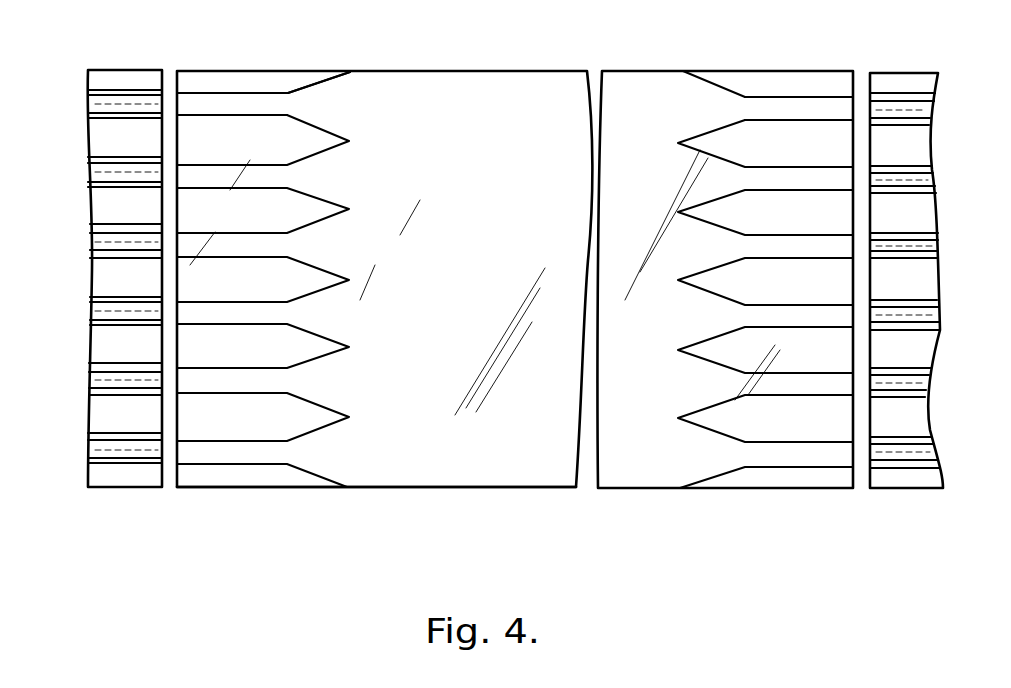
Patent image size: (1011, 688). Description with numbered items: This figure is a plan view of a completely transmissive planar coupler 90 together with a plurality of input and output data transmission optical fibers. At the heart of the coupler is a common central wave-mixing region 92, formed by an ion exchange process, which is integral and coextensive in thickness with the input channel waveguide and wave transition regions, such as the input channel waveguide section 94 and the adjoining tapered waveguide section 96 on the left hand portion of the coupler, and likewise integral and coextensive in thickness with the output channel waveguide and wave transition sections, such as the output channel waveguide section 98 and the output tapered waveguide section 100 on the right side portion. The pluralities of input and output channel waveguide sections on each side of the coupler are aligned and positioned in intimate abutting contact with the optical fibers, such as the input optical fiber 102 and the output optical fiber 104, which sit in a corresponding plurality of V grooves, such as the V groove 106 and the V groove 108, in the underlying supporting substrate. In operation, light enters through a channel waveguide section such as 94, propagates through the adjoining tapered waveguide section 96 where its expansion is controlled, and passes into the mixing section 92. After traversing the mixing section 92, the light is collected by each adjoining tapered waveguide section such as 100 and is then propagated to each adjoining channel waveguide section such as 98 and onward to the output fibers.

The completely transmissive planar coupler 90 is at (502, 70).
The common central wave-mixing region 92 is at (397, 478).
The input channel waveguide section 94 is at (232, 102).
The input tapered waveguide section 96 is at (335, 85).
The output channel waveguide section 98 is at (817, 107).
The output tapered waveguide section 100 is at (703, 93).
The input optical fiber 102 is at (93, 105).
The output optical fiber 104 is at (920, 112).
The V groove for input fiber 106 is at (112, 93).
The V groove for output fiber 108 is at (917, 93).